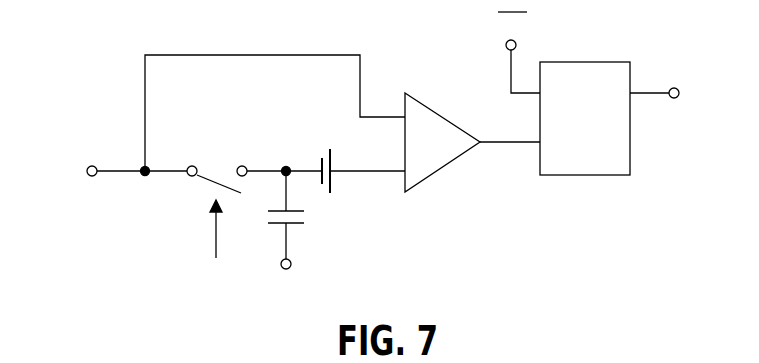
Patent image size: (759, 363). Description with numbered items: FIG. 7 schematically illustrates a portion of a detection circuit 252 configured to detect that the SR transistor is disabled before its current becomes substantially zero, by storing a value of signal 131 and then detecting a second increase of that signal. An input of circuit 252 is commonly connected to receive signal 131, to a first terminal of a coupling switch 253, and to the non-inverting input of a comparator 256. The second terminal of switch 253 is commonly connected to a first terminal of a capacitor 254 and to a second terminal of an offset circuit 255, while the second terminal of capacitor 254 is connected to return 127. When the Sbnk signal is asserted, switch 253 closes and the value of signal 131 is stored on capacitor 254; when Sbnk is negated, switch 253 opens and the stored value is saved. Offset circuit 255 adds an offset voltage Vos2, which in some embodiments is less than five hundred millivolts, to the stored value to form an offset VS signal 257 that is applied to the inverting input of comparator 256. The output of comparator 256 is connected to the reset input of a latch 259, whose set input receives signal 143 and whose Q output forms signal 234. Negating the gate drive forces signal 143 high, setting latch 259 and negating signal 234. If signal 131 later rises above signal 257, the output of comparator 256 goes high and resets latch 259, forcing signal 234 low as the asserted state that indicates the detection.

The detection circuit 252 is at (68, 60).
The signal 131 is at (96, 176).
The coupling switch 253 is at (207, 184).
The capacitor 254 is at (300, 228).
The return 127 is at (291, 268).
The offset circuit 255 is at (332, 148).
The offset VS signal 257 is at (350, 170).
The comparator 256 is at (440, 112).
The signal 143 is at (516, 43).
The latch 259 is at (632, 158).
The signal 234 is at (680, 97).